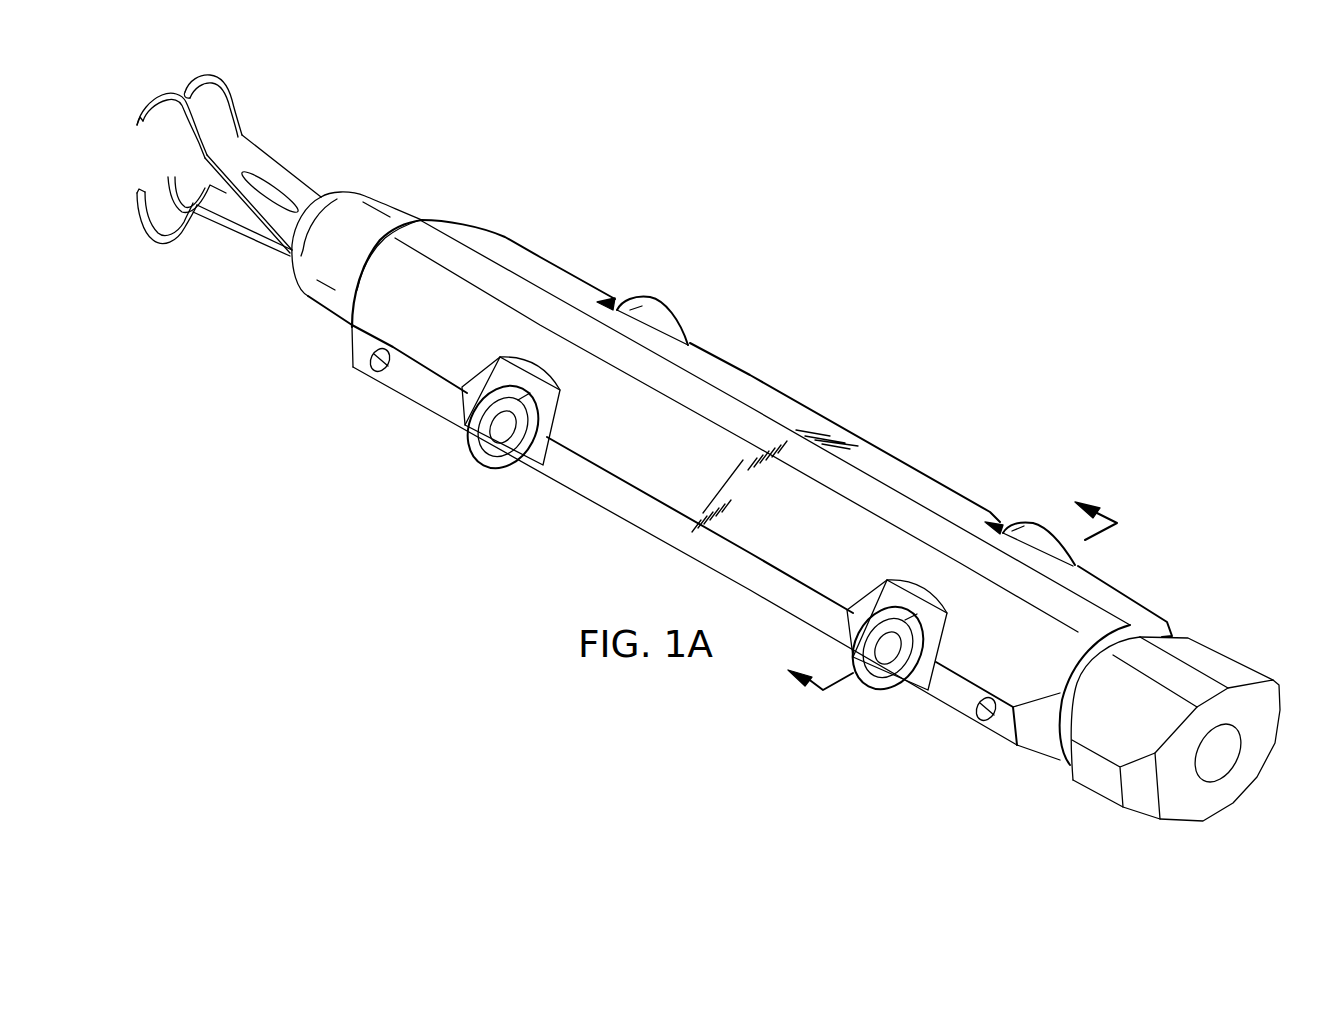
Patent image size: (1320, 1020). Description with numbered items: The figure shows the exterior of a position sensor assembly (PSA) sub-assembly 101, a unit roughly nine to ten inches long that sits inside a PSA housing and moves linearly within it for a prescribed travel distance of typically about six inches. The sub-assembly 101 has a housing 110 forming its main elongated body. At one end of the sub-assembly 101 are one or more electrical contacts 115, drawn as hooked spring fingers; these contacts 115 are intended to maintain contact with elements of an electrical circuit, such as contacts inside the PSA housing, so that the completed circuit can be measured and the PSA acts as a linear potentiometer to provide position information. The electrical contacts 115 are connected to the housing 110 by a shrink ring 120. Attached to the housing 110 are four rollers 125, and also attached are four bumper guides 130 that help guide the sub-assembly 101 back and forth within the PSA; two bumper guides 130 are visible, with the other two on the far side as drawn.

The PSA sub-assembly 101 is at (781, 136).
The housing 110 is at (557, 262).
The electrical contacts 115 is at (164, 94).
The shrink ring 120 is at (393, 208).
The rollers 125 is at (650, 310).
The bumper guides 130 is at (367, 362).